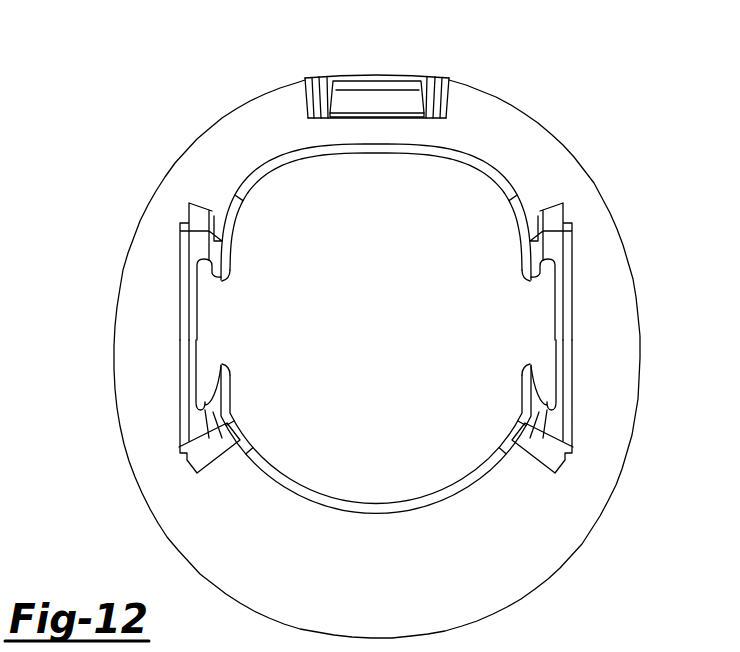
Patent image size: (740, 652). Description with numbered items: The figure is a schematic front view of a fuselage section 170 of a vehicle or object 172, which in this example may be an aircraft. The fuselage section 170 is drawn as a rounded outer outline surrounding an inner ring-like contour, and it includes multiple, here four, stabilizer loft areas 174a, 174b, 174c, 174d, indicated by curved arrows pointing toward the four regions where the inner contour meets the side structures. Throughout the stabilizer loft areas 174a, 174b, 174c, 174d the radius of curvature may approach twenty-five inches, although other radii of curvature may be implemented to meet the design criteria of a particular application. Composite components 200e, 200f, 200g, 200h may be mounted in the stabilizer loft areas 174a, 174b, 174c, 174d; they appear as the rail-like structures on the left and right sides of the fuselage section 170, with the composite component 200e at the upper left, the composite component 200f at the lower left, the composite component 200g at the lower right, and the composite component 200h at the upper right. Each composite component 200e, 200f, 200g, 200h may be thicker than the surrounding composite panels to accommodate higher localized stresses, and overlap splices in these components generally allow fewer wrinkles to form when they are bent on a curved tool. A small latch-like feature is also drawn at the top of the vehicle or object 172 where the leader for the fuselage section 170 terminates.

The fuselage section 170 is at (343, 67).
The vehicle or object 172 is at (357, 75).
The stabilizer loft area 174a is at (240, 246).
The stabilizer loft area 174b is at (245, 388).
The stabilizer loft area 174c is at (507, 388).
The stabilizer loft area 174d is at (512, 246).
The composite component 200e is at (197, 212).
The composite component 200f is at (190, 461).
The composite component 200g is at (562, 461).
The composite component 200h is at (555, 212).